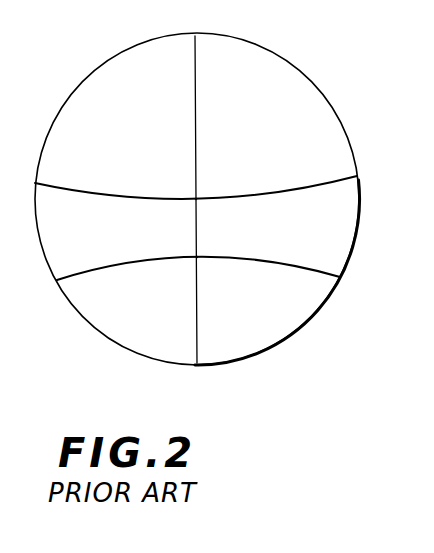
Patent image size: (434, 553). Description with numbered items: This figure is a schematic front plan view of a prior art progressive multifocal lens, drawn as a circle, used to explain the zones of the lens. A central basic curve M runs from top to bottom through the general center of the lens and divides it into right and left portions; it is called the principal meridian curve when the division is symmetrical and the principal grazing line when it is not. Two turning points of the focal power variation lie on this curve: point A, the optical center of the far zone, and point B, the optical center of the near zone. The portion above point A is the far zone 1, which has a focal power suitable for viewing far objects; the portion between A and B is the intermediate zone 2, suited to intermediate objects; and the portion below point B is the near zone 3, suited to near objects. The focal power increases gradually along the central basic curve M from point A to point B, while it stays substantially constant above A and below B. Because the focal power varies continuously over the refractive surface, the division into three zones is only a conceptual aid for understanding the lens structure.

The far zone 1 is at (310, 90).
The intermediate zone 2 is at (351, 214).
The near zone 3 is at (283, 323).
The central basic curve M is at (197, 38).
The point A is at (205, 187).
The point B is at (207, 244).